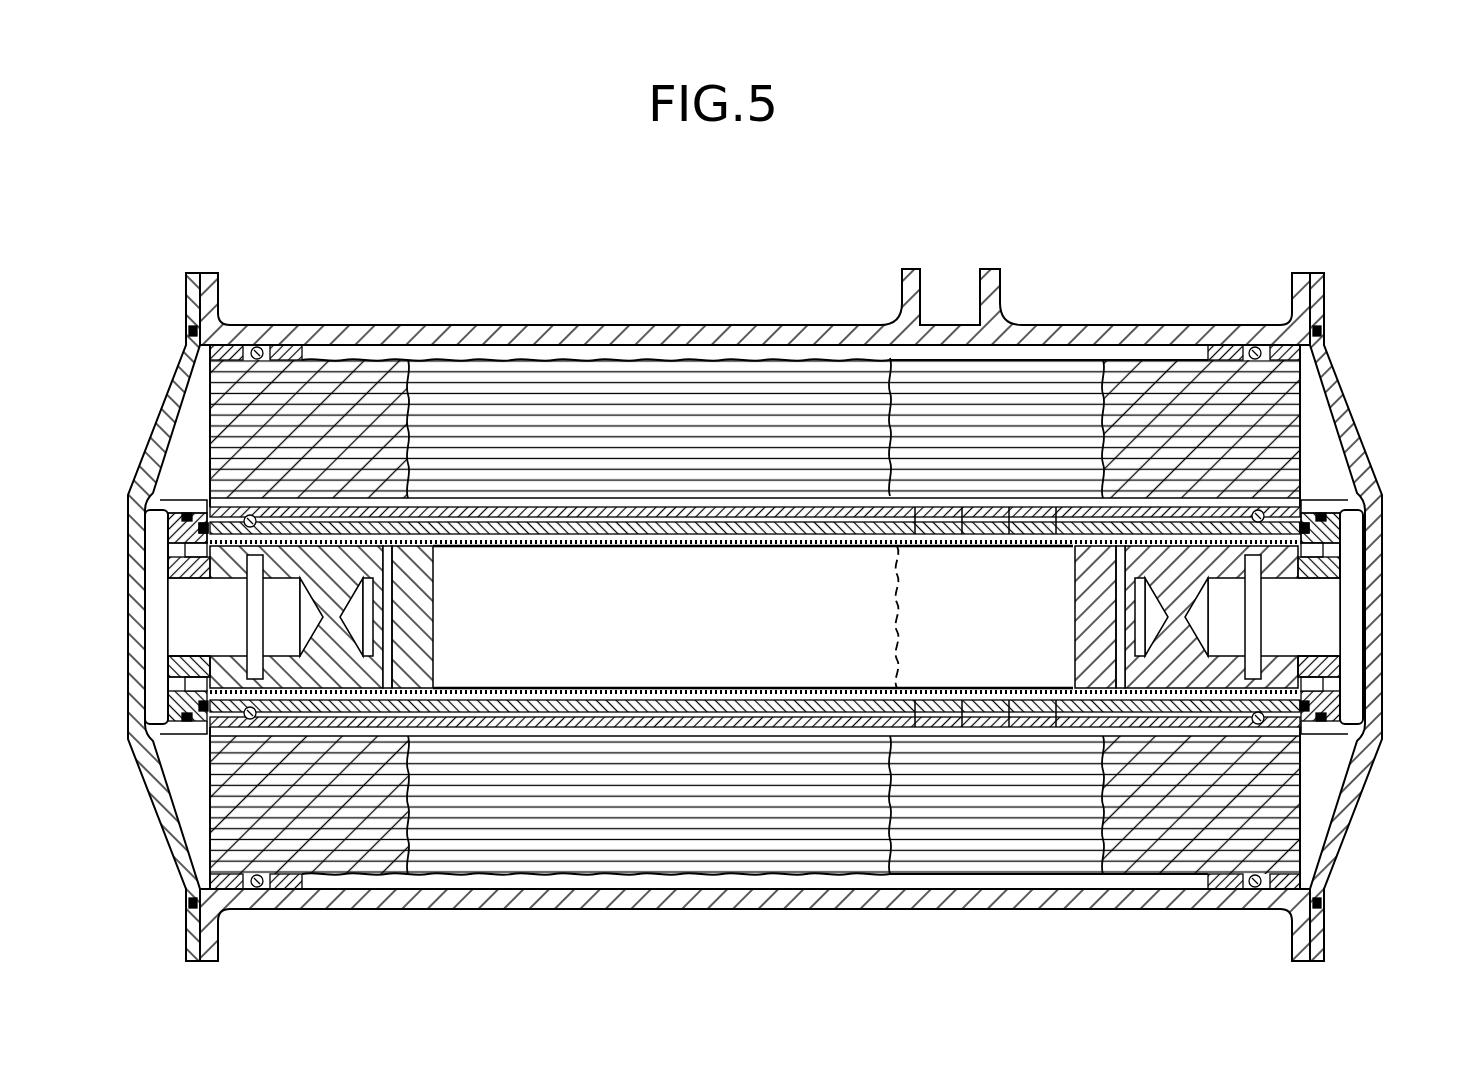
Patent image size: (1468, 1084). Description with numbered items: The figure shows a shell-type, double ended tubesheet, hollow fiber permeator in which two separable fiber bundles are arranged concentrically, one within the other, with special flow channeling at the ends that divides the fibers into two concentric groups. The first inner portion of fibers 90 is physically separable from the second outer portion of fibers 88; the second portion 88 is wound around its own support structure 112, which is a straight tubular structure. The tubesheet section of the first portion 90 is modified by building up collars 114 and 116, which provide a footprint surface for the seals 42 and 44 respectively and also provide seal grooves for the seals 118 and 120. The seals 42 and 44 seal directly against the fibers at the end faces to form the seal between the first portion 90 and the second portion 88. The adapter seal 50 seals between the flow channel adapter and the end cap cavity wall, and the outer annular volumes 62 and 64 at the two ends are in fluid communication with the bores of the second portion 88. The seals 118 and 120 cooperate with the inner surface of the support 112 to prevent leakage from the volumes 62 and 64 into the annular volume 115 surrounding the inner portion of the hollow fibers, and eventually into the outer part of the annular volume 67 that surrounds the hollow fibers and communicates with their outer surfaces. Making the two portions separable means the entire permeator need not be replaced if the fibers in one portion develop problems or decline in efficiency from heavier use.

The o-ring seal 42 is at (1340, 673).
The o-ring seal 44 is at (187, 688).
The adapter o-ring seal 50 is at (1340, 523).
The outer annular volume 62 is at (1312, 383).
The outer annular volume 64 is at (198, 395).
The annular volume 67 is at (1172, 352).
The second portion of hollow fibers 88 is at (578, 420).
The first portion of hollow fibers 90 is at (627, 537).
The support structure 112 is at (812, 532).
The collar 114 is at (1305, 520).
The annular volume 115 is at (468, 522).
The collar 116 is at (205, 513).
The seal 118 is at (1258, 515).
The seal 120 is at (206, 528).